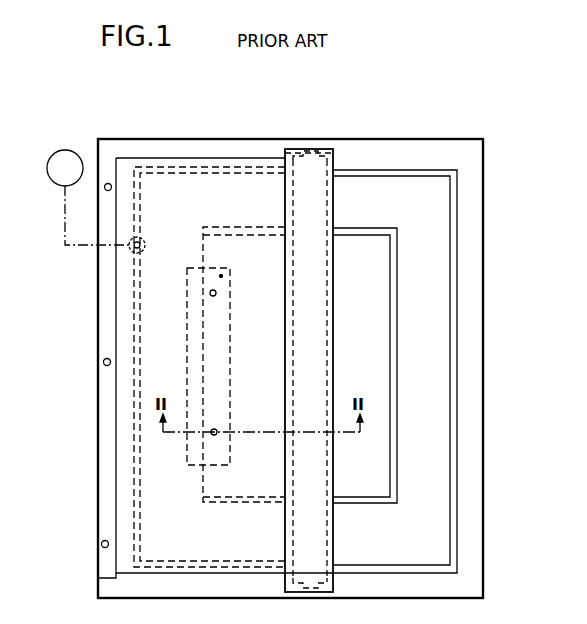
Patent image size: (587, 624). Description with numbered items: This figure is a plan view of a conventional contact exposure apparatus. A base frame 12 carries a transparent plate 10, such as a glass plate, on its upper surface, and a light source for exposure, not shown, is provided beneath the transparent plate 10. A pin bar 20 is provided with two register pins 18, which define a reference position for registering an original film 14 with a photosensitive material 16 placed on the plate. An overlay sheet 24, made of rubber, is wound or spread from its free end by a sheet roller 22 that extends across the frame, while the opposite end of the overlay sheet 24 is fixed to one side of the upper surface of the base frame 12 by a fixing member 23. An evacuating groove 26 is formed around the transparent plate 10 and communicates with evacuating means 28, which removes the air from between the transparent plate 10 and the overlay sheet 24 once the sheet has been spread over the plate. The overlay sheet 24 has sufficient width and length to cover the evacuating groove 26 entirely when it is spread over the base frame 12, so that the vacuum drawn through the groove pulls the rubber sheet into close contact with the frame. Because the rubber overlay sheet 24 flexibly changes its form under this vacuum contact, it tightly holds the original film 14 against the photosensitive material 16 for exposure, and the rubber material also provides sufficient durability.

The transparent plate 10 is at (440, 447).
The base frame 12 is at (468, 328).
The original film 14 is at (398, 332).
The photosensitive material 16 is at (390, 396).
The register pins 18 is at (217, 291).
The pin bar 20 is at (187, 383).
The sheet roller 22 is at (330, 345).
The fixing member 23 is at (100, 425).
The overlay sheet 24 is at (210, 158).
The evacuating groove 26 is at (457, 523).
The evacuating means 28 is at (65, 150).